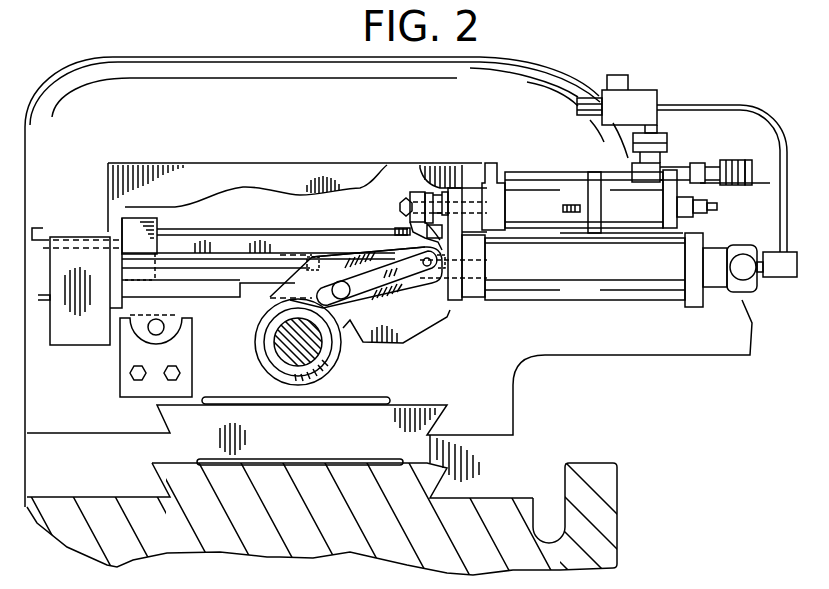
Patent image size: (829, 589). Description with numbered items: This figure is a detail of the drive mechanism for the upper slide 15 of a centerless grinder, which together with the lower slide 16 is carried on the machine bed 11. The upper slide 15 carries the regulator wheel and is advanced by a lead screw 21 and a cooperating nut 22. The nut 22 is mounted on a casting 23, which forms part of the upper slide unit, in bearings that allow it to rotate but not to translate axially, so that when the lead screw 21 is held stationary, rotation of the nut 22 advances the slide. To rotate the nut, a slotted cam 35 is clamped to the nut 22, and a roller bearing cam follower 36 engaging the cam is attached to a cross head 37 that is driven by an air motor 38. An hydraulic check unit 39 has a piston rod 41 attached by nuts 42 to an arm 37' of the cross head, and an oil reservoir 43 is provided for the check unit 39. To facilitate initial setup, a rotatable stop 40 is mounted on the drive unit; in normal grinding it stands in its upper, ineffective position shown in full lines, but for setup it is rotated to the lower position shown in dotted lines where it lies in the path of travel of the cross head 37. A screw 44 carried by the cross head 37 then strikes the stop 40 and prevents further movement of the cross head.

The machine bed 11 is at (603, 512).
The upper slide 15 is at (503, 414).
The lower slide 16 is at (504, 460).
The lead screw 21 is at (277, 372).
The nut 22 is at (275, 344).
The casting 23 is at (245, 72).
The slotted cam 35 is at (363, 302).
The roller bearing cam follower 36 is at (333, 294).
The cross head 37 is at (378, 235).
The arm of the cross head 37' is at (400, 221).
The air motor 38 is at (563, 288).
The hydraulic check unit 39 is at (531, 190).
The rotatable stop 40 is at (127, 222).
The piston rod 41 is at (452, 186).
The nuts 42 is at (420, 195).
The oil reservoir 43 is at (610, 196).
The screw 44 is at (309, 256).